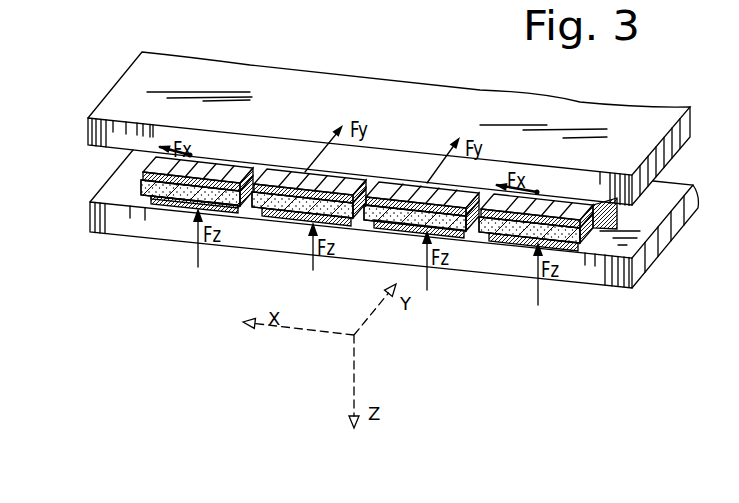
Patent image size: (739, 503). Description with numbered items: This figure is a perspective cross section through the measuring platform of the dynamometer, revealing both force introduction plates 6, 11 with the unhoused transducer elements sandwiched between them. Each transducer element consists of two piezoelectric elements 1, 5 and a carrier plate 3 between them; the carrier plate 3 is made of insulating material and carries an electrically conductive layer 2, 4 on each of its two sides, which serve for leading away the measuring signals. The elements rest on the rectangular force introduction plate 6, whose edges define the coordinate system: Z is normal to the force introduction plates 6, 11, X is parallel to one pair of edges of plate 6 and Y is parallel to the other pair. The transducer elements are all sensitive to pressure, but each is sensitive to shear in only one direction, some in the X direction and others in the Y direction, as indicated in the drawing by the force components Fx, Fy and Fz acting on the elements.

The piezoelectric element 1 is at (172, 163).
The electrically conductive layer 2 is at (143, 173).
The carrier plate 3 is at (143, 193).
The electrically conductive layer 4 is at (160, 203).
The piezoelectric element 5 is at (167, 200).
The force introduction plate 6 is at (177, 227).
The force introduction plate 11 is at (117, 133).